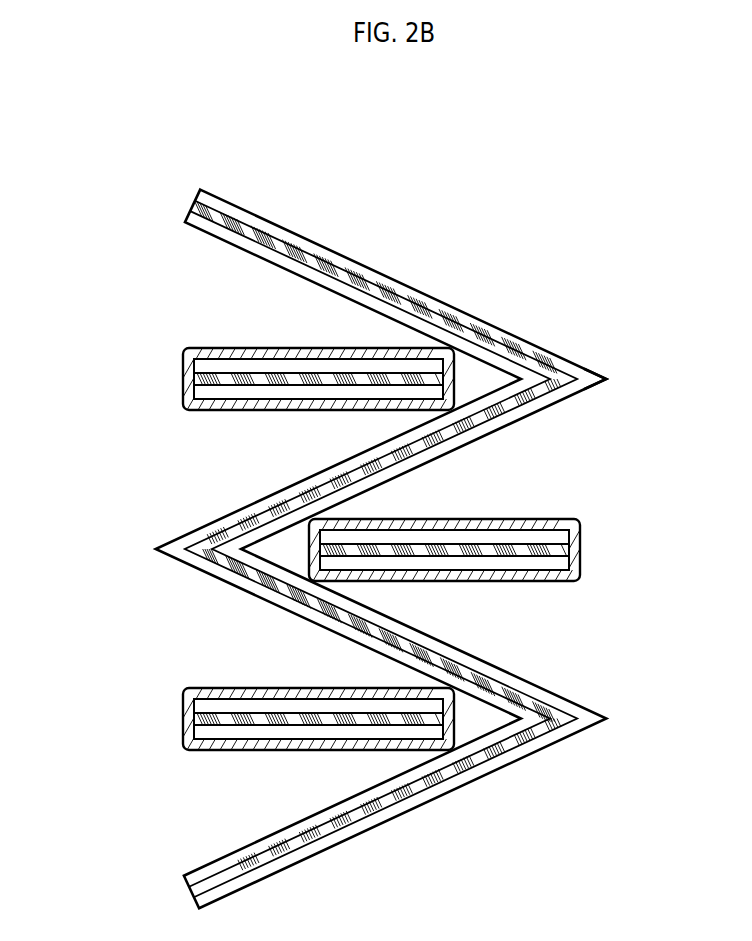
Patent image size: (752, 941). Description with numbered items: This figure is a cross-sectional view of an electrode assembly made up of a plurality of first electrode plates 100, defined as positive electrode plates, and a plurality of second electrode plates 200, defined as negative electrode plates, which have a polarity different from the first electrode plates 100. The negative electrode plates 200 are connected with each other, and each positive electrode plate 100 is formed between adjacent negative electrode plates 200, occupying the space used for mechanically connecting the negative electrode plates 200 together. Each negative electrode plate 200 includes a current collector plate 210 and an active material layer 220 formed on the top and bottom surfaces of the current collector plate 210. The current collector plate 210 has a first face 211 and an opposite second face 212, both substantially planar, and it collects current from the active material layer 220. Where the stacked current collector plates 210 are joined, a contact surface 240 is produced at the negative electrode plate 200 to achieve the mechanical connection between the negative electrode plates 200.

The first electrode plate 100 is at (151, 370).
The second electrode plate 200 is at (377, 512).
The current collector plate 210 is at (188, 207).
The first face 211 is at (194, 201).
The second face 212 is at (188, 211).
The active material layer 220 is at (533, 352).
The contact surface 240 is at (594, 377).